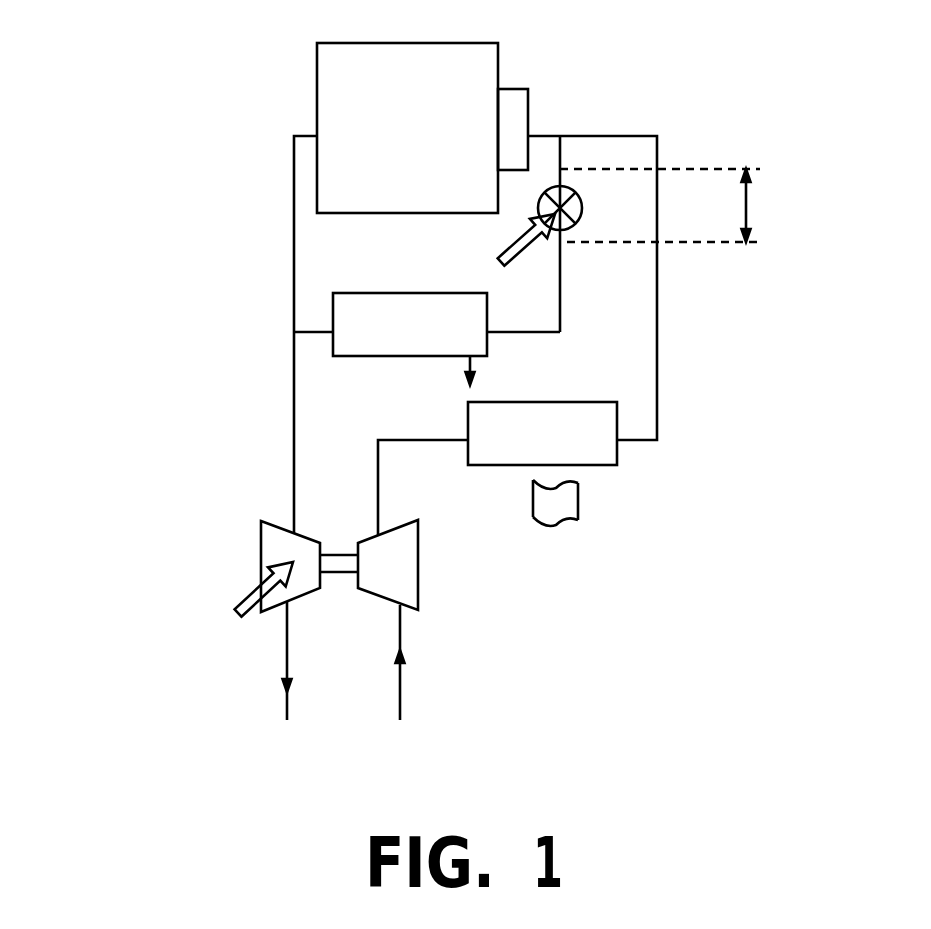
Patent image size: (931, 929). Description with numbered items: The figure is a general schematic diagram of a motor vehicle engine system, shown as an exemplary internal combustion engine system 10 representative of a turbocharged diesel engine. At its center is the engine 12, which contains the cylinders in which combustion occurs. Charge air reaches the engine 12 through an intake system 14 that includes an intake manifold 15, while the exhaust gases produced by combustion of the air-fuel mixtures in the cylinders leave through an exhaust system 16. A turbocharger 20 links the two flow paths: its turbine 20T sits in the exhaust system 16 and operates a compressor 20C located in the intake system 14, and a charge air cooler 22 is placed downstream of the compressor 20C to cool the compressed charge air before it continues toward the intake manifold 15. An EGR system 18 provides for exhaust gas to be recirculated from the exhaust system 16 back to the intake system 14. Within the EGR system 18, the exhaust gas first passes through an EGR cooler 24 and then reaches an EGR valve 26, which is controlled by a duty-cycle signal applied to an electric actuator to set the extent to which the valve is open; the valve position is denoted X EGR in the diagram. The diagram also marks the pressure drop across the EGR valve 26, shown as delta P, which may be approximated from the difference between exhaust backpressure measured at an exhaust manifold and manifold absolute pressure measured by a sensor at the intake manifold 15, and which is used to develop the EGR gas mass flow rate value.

The internal combustion engine system 10 is at (773, 503).
The engine 12 is at (498, 63).
The intake system 14 is at (680, 385).
The intake manifold 15 is at (528, 135).
The exhaust system 16 is at (283, 446).
The EGR system 18 is at (560, 348).
The turbocharger 20 is at (316, 620).
The turbine 20T is at (262, 550).
The compressor 20C is at (418, 567).
The charge air cooler 22 is at (617, 465).
The EGR cooler 24 is at (368, 293).
The EGR valve 26 is at (580, 230).